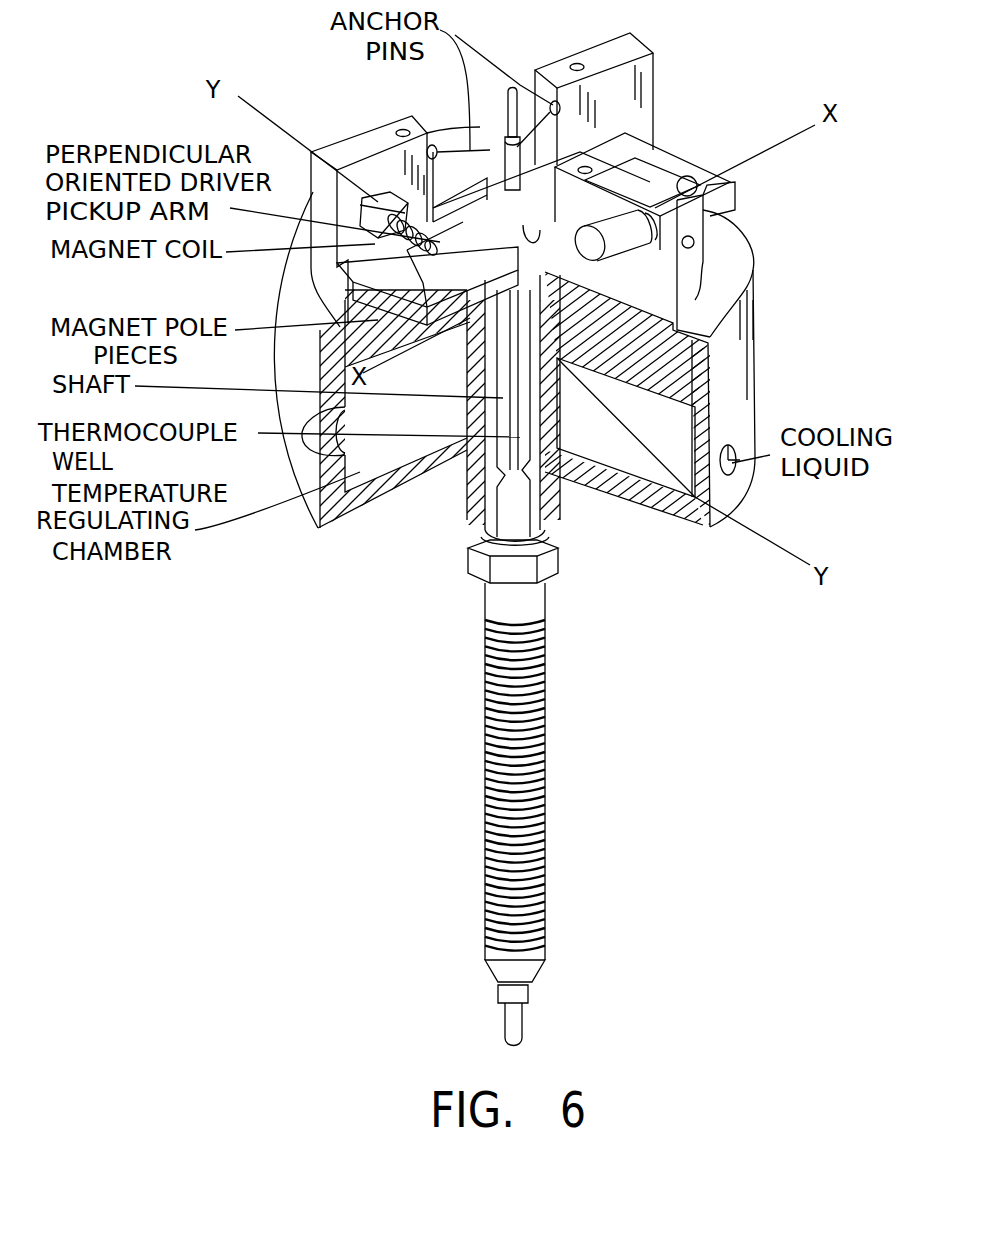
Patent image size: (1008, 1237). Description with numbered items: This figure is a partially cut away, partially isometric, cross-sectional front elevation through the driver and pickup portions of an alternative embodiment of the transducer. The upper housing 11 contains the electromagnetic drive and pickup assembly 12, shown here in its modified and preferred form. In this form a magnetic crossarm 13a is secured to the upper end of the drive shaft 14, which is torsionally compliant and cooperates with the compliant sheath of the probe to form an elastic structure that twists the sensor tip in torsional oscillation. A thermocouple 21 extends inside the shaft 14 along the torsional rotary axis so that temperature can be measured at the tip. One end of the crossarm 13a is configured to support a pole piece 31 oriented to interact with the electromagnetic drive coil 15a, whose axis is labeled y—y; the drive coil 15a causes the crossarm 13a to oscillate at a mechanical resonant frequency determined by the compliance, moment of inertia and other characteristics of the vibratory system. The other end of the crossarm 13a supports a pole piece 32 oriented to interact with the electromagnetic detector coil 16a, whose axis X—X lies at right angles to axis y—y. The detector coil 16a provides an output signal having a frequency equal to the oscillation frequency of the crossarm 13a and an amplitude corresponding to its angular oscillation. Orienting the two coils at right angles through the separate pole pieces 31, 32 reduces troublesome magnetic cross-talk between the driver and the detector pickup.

The upper housing 11 is at (697, 380).
The electromagnetic drive and pickup assembly 12 is at (385, 162).
The crossarm 13a is at (652, 157).
The drive shaft 14 is at (530, 245).
The electromagnetic drive coil 15a is at (385, 244).
The electromagnetic detector coil 16a is at (745, 296).
The thermocouple 21 is at (508, 105).
The pole piece 31 is at (420, 290).
The pole piece 32 is at (692, 172).